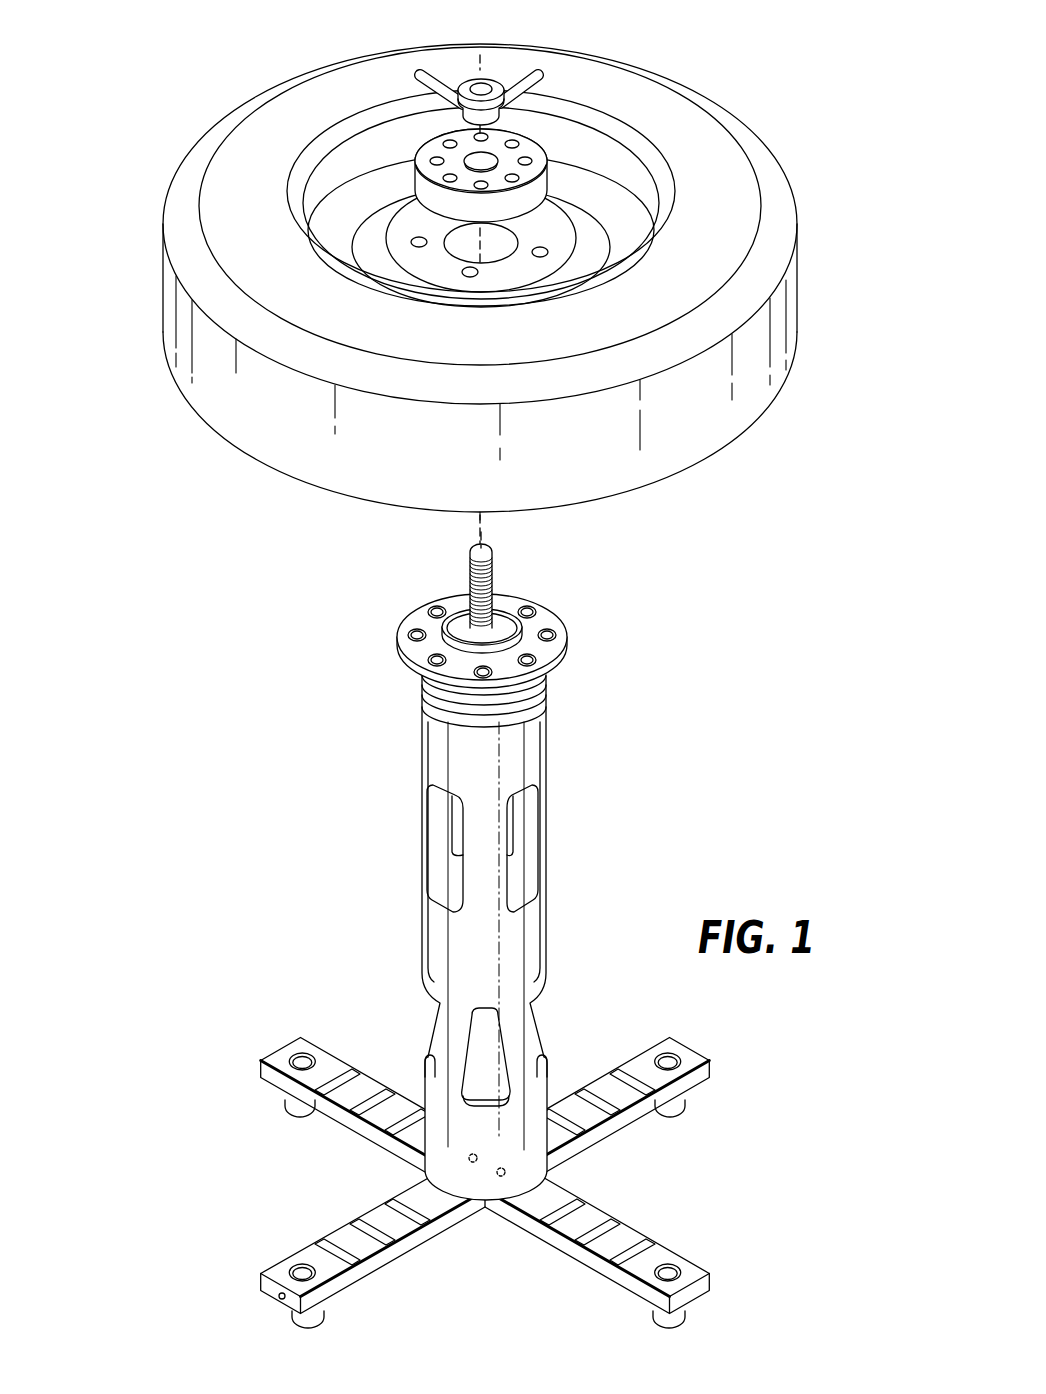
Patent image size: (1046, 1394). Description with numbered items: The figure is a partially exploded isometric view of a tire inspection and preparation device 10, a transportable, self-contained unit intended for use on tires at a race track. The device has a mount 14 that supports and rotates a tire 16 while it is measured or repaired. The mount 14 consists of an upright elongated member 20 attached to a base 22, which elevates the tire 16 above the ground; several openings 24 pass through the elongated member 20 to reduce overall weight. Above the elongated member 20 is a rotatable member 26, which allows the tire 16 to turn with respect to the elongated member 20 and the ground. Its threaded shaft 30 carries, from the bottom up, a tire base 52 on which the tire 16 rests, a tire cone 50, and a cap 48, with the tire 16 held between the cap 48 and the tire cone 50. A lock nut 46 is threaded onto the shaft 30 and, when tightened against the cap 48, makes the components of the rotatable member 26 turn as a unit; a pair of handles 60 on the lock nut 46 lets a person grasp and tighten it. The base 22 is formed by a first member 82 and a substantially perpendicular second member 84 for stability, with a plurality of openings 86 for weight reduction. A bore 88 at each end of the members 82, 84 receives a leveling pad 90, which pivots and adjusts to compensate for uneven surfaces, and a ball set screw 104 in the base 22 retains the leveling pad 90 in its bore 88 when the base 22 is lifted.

The tire inspection and preparation device 10 is at (474, 673).
The mount 14 is at (474, 1001).
The tire 16 is at (167, 296).
The elongated member 20 is at (495, 937).
The base 22 is at (474, 1156).
The openings 24 is at (530, 853).
The rotatable member 26 is at (510, 610).
The threaded shaft 30 is at (492, 568).
The lock nut 46 is at (493, 71).
The cap 48 is at (533, 152).
The tire cone 50 is at (503, 614).
The tire base 52 is at (567, 646).
The handles 60 is at (546, 72).
The first member 82 is at (350, 1253).
The second member 84 is at (336, 1052).
The openings 86 is at (607, 1220).
The bore 88 is at (677, 1262).
The leveling pad 90 is at (320, 1313).
The ball set screw 104 is at (272, 1299).